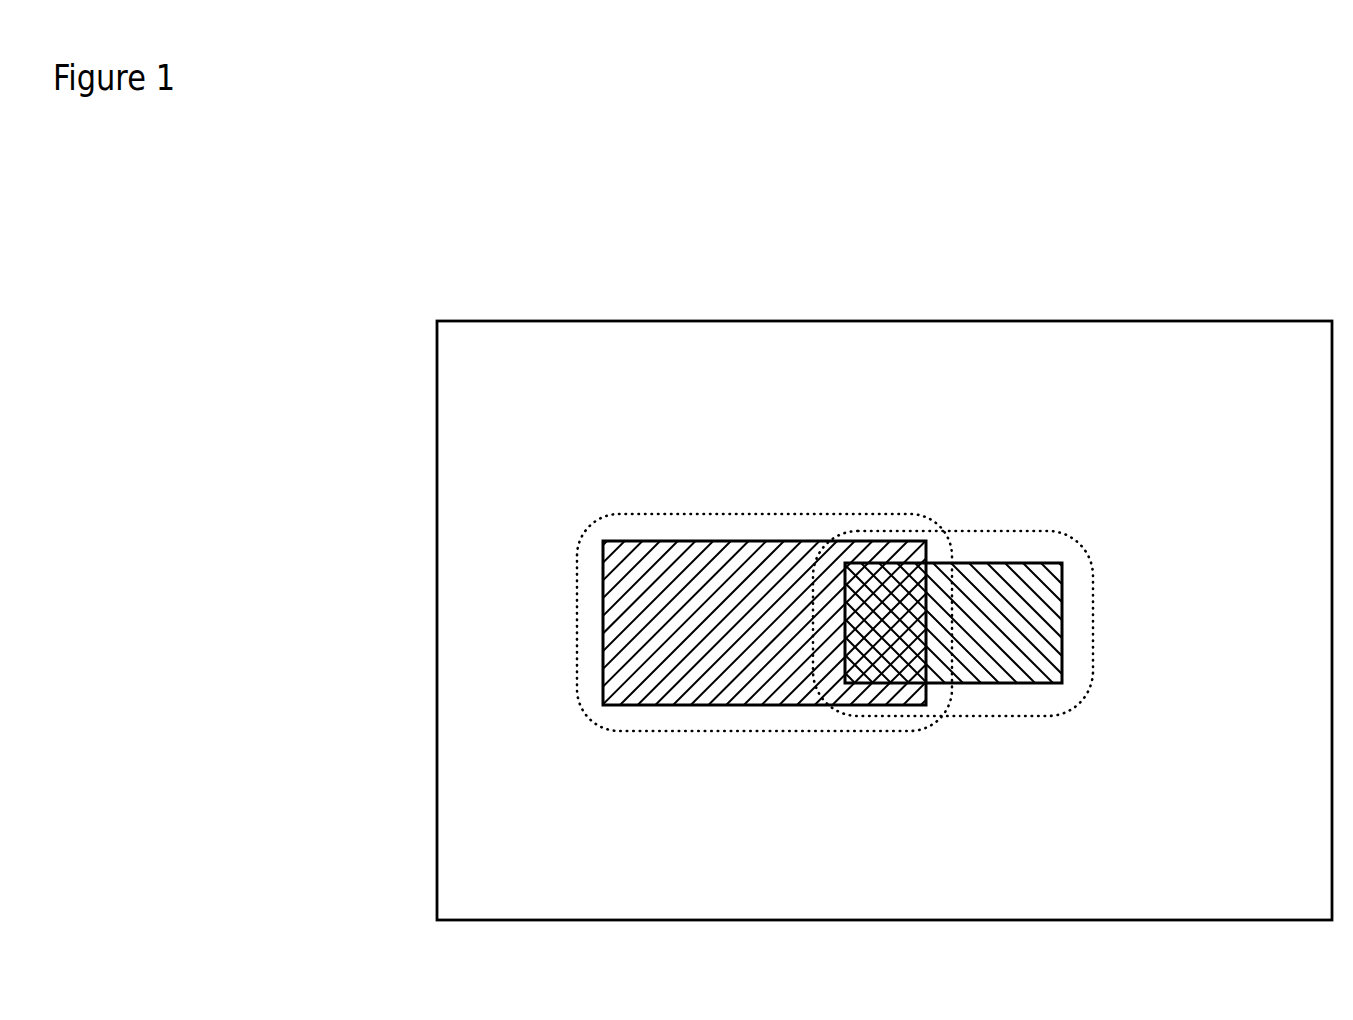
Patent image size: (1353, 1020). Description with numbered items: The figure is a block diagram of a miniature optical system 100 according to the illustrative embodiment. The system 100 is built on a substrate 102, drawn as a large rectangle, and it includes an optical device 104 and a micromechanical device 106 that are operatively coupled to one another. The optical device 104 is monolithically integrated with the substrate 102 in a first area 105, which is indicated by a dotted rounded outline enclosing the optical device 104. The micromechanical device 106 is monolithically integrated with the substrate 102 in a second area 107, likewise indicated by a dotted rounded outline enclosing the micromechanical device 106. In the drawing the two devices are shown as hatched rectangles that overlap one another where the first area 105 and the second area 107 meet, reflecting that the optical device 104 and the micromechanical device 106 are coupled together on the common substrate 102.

The miniature optical system 100 is at (322, 280).
The substrate 102 is at (630, 370).
The optical device 104 is at (957, 674).
The first area 105 is at (981, 585).
The micromechanical device 106 is at (763, 673).
The second area 107 is at (761, 584).